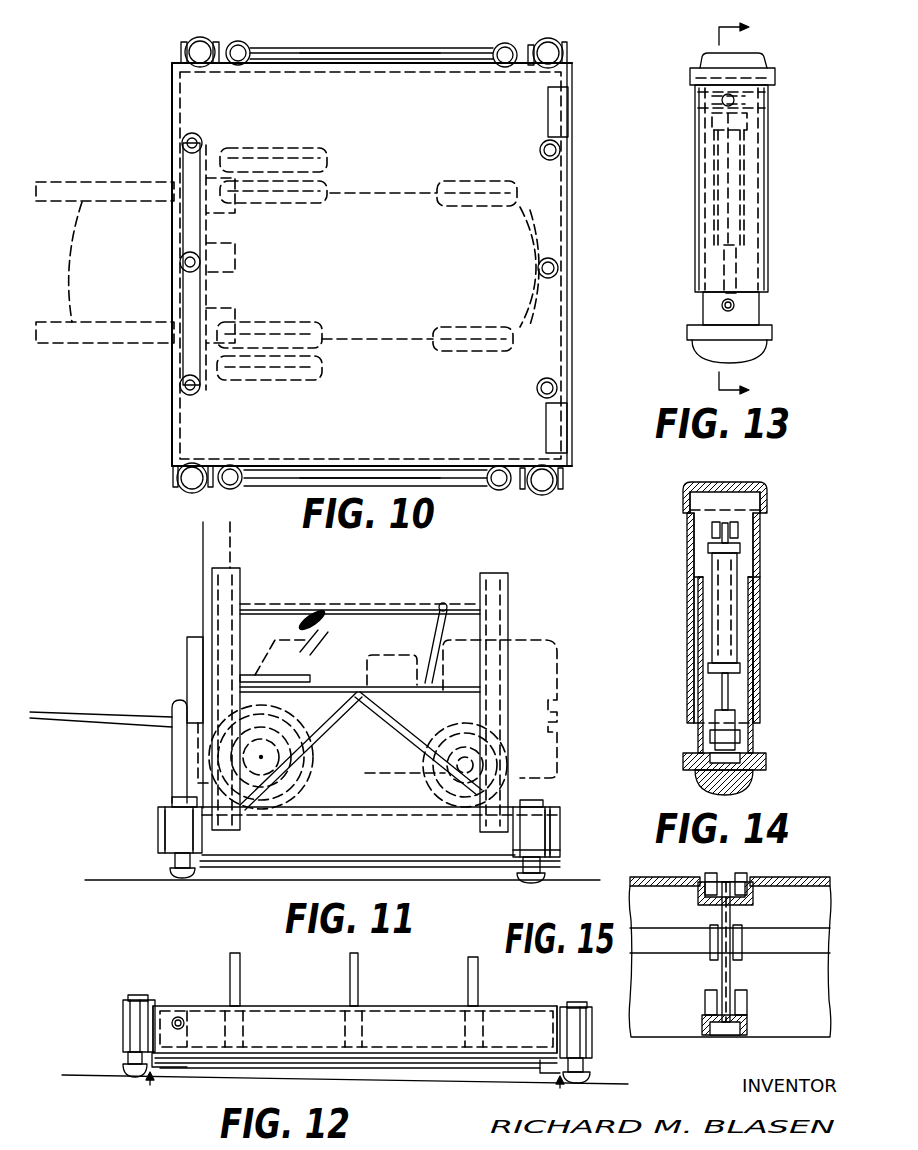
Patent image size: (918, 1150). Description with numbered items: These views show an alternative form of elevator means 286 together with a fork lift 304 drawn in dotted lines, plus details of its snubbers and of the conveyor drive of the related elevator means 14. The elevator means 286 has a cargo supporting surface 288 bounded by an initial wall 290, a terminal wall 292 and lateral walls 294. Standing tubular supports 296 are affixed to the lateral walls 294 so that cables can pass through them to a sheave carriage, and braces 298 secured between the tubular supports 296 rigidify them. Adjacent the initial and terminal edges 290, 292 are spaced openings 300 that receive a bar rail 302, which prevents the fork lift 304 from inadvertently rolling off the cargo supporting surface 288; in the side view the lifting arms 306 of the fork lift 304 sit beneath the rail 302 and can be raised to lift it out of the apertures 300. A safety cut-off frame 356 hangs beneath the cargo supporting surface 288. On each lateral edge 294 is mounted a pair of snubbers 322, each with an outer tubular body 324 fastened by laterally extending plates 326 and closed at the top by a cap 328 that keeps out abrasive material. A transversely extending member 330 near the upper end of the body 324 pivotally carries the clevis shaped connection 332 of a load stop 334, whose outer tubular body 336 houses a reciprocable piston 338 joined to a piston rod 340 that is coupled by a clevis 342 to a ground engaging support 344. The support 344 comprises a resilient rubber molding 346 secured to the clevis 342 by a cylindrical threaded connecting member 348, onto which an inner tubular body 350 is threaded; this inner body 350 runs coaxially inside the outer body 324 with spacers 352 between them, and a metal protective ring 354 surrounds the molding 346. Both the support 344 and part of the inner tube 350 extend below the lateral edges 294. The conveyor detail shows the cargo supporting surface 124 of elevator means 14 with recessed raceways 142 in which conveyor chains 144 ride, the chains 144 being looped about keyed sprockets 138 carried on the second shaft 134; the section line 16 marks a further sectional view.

In FIG. 13, the elevator means 14 is at (747, 213).
In FIG. 12, the section line 16- 16 is at (349, 1089).
In FIG. 15, the cargo supporting surface 124 is at (792, 877).
In FIG. 15, the second shaft 134 is at (783, 928).
In FIG. 15, the keyed sprockets 138 is at (732, 976).
In FIG. 15, the recessed raceways 142 is at (698, 900).
In FIG. 15, the conveyor chains 144 is at (748, 878).
In FIG. 10, the elevator means 286 is at (582, 104).
In FIG. 10, the cargo supporting surface 288 is at (425, 150).
In FIG. 11, the cargo supporting surface 288 is at (385, 810).
In FIG. 12, the cargo supporting surface 288 is at (315, 1003).
In FIG. 10, the initial wall 290 is at (575, 222).
In FIG. 11, the initial wall 290 is at (560, 808).
In FIG. 10, the terminal wall 292 is at (172, 97).
In FIG. 11, the terminal wall 292 is at (158, 800).
In FIG. 12, the terminal wall 292 is at (390, 1010).
In FIG. 10, the lateral walls 294 is at (400, 65).
In FIG. 11, the lateral walls 294 is at (378, 841).
In FIG. 12, the lateral walls 294 is at (150, 1005).
In FIG. 10, the standing tubular supports 296 is at (250, 62).
In FIG. 11, the standing tubular supports 296 is at (240, 592).
In FIG. 10, the braces 298 is at (332, 60).
In FIG. 11, the braces 298 is at (332, 688).
In FIG. 10, the spaced openings 300 is at (193, 133).
In FIG. 12, the spaced openings 300 is at (242, 1030).
In FIG. 10, the bar rail 302 is at (186, 168).
In FIG. 11, the bar rail 302 is at (172, 705).
In FIG. 12, the bar rail 302 is at (242, 975).
In FIG. 10, the fork lift 304 is at (395, 350).
In FIG. 11, the fork lift 304 is at (385, 660).
In FIG. 10, the lifting arms 306 is at (76, 232).
In FIG. 11, the lifting arms 306 is at (90, 705).
In FIG. 10, the snubber 322 is at (184, 43).
In FIG. 11, the snubber 322 is at (156, 833).
In FIG. 12, the snubber 322 is at (120, 1036).
In FIG. 13, the snubber 322 is at (777, 168).
In FIG. 14, the snubber 322 is at (768, 566).
In FIG. 13, the outer tubular body 324 is at (770, 122).
In FIG. 14, the outer tubular body 324 is at (762, 603).
In FIG. 10, the laterally extending plates 326 is at (180, 50).
In FIG. 11, the laterally extending plates 326 is at (518, 843).
In FIG. 13, the cap 328 is at (762, 58).
In FIG. 14, the cap 328 is at (758, 486).
In FIG. 13, the transversely extending member 330 is at (770, 92).
In FIG. 14, the transversely extending member 330 is at (730, 522).
In FIG. 13, the clevis shaped connection 332 is at (712, 100).
In FIG. 14, the clevis shaped connection 332 is at (740, 530).
In FIG. 13, the load stop 334 is at (742, 195).
In FIG. 14, the load stop 334 is at (706, 562).
In FIG. 14, the outer tubular body 336 is at (712, 565).
In FIG. 14, the reciprocable piston 338 is at (700, 603).
In FIG. 13, the piston rod 340 is at (742, 278).
In FIG. 14, the piston rod 340 is at (722, 705).
In FIG. 13, the clevis 342 is at (745, 303).
In FIG. 14, the clevis 342 is at (737, 727).
In FIG. 14, the ground engaging support 344 is at (772, 766).
In FIG. 13, the resilient rubber molding 346 is at (705, 360).
In FIG. 14, the resilient rubber molding 346 is at (755, 790).
In FIG. 14, the cylindrical threaded connecting member 348 is at (742, 745).
In FIG. 13, the inner tubular body 350 is at (752, 319).
In FIG. 14, the inner tubular body 350 is at (697, 738).
In FIG. 14, the spacers 352 is at (700, 585).
In FIG. 13, the metal protective ring 354 is at (773, 333).
In FIG. 14, the metal protective ring 354 is at (688, 762).
In FIG. 11, the safety cut-off frame 356 is at (255, 872).
In FIG. 12, the safety cut-off frame 356 is at (412, 1070).